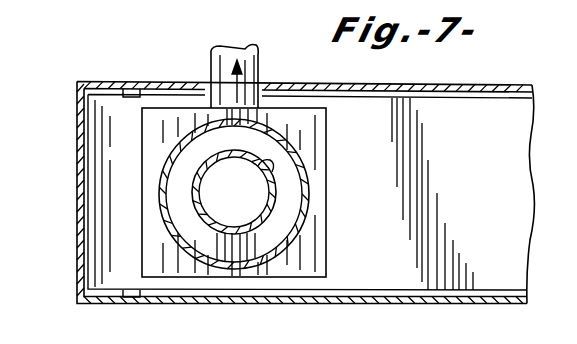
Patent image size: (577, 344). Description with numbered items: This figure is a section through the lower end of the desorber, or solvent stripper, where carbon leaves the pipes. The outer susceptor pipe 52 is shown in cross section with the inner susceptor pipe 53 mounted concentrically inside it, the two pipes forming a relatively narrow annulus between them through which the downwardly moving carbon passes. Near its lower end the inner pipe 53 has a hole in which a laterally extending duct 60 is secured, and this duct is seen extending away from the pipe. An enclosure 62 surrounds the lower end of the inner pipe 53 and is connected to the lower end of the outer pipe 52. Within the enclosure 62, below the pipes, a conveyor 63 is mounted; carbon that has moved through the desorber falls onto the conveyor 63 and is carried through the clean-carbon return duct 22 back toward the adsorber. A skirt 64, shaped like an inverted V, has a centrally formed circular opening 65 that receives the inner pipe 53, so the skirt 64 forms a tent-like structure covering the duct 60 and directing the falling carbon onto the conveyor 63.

The clean-carbon return duct 22 is at (519, 81).
The outer susceptor pipe 52 is at (303, 228).
The inner susceptor pipe 53 is at (273, 197).
The laterally extending duct 60 is at (258, 66).
The enclosure 62 is at (98, 81).
The conveyor 63 is at (495, 215).
The skirt 64 is at (305, 108).
The circular opening 65 is at (268, 177).